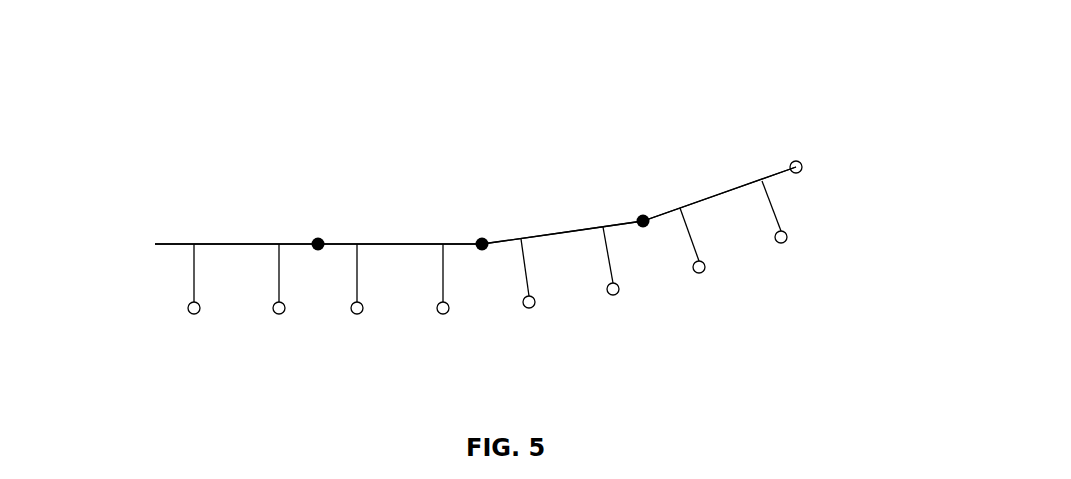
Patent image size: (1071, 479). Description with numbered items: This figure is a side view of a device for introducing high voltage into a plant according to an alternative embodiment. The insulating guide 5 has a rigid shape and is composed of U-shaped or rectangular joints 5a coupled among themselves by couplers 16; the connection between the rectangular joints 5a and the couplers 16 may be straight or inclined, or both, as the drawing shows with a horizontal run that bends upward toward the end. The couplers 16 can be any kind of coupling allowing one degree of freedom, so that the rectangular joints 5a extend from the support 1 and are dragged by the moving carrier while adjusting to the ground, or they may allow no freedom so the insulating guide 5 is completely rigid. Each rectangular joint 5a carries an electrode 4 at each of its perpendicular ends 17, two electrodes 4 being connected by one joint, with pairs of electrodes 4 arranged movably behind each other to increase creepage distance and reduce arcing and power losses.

The insulating guide 5 is at (398, 108).
The rectangular joint 5a is at (226, 226).
The coupler 16 is at (312, 217).
The electrode 4 is at (150, 322).
The perpendicular end 17 is at (792, 206).
The support 1 is at (778, 153).